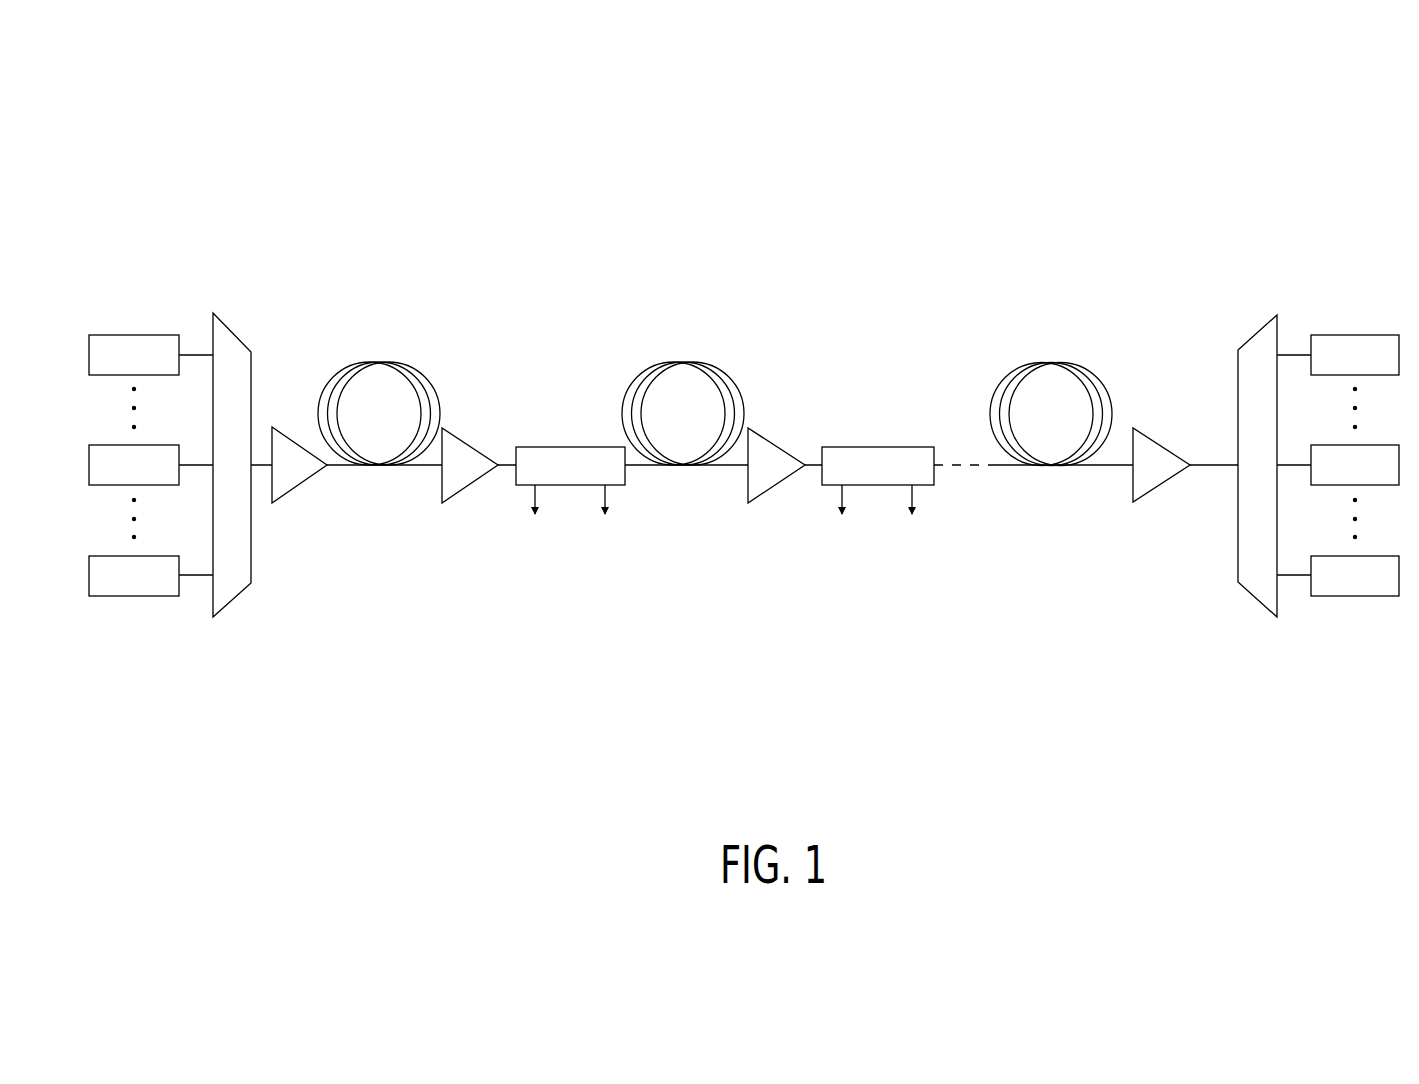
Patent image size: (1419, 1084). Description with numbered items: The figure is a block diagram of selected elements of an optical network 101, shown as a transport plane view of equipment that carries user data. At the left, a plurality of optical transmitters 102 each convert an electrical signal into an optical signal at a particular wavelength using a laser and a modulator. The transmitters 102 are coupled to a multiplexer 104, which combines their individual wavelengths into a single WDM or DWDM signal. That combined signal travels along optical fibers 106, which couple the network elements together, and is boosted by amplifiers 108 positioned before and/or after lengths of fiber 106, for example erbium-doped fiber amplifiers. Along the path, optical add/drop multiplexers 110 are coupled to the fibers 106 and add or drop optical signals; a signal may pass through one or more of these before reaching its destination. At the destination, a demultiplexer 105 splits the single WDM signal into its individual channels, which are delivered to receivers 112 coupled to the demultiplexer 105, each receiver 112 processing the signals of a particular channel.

The optical network 101 is at (183, 68).
The transmitters 102 is at (120, 333).
The multiplexer 104 is at (232, 322).
The demultiplexer 105 is at (1256, 321).
The optical fibers 106 is at (370, 362).
The amplifiers 108 is at (297, 493).
The optical add/drop multiplexers 110 is at (559, 447).
The receivers 112 is at (1370, 333).